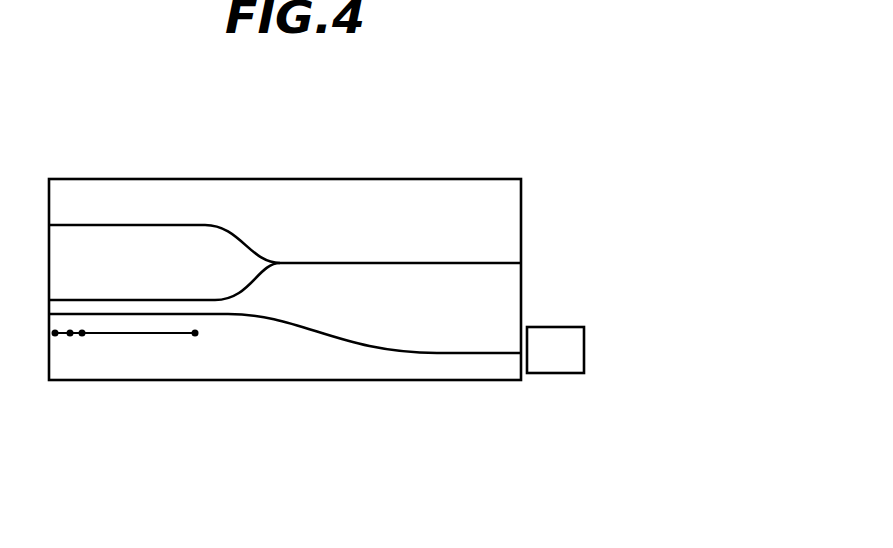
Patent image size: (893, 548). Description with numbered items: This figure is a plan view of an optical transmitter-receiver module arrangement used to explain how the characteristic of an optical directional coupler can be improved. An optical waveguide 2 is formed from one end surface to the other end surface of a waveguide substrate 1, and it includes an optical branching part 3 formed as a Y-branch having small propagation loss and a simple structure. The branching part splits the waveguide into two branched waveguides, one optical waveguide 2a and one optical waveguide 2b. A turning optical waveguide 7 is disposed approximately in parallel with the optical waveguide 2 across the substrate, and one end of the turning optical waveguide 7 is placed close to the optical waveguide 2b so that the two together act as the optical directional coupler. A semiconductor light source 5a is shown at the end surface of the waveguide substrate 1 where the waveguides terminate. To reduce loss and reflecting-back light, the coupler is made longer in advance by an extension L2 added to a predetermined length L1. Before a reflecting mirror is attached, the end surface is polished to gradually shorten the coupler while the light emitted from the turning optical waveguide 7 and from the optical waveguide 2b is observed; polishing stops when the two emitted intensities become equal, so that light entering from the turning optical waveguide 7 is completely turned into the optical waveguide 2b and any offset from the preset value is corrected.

The waveguide substrate 1 is at (363, 380).
The optical waveguide 2 is at (428, 257).
The optical waveguide 2a is at (79, 225).
The optical waveguide 2b is at (215, 299).
The optical branching part 3 is at (292, 258).
The semiconductor light source 5a is at (561, 345).
The turning optical waveguide 7 is at (215, 318).
The predetermined length L1 is at (173, 340).
The extension length L2 is at (71, 340).